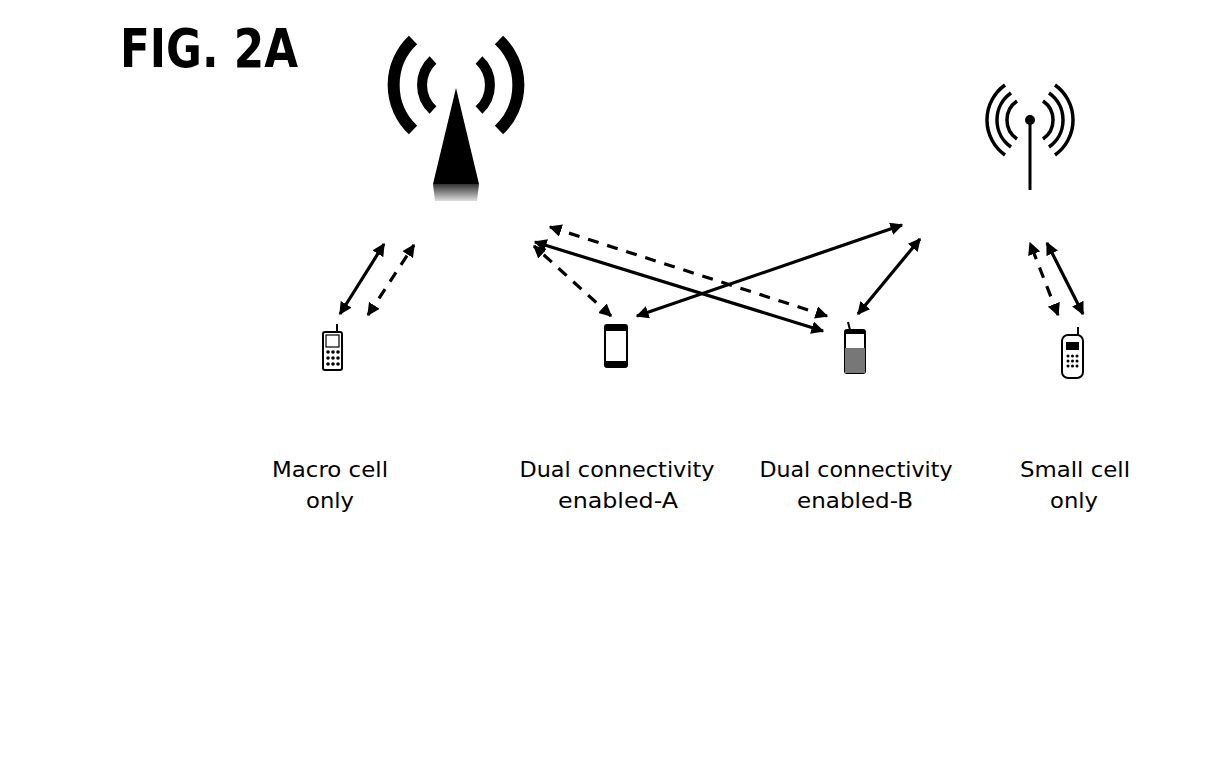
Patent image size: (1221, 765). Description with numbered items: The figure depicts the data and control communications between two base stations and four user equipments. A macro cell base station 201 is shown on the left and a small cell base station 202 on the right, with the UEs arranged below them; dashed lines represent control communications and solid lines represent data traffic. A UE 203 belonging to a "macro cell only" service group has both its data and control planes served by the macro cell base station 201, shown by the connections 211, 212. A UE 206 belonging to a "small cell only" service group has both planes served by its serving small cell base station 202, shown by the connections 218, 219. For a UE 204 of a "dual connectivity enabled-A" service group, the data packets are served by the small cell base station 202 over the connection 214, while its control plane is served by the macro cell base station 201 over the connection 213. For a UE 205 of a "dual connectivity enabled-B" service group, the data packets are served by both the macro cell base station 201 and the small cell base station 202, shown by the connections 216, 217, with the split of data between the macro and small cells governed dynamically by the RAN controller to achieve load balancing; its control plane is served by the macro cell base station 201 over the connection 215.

The macro cell base station 201 is at (523, 90).
The small cell base station 202 is at (1073, 95).
The macro cell only UE 203 is at (342, 372).
The dual connectivity enabled-A UE 204 is at (615, 365).
The dual connectivity enabled-B UE 205 is at (860, 373).
The small cell only UE 206 is at (1083, 377).
The connection 211 is at (365, 285).
The connection 212 is at (390, 282).
The connection 213 is at (572, 282).
The connection 214 is at (823, 250).
The connection 215 is at (635, 250).
The connection 216 is at (737, 308).
The connection 217 is at (872, 300).
The connection 218 is at (1048, 292).
The connection 219 is at (1063, 267).